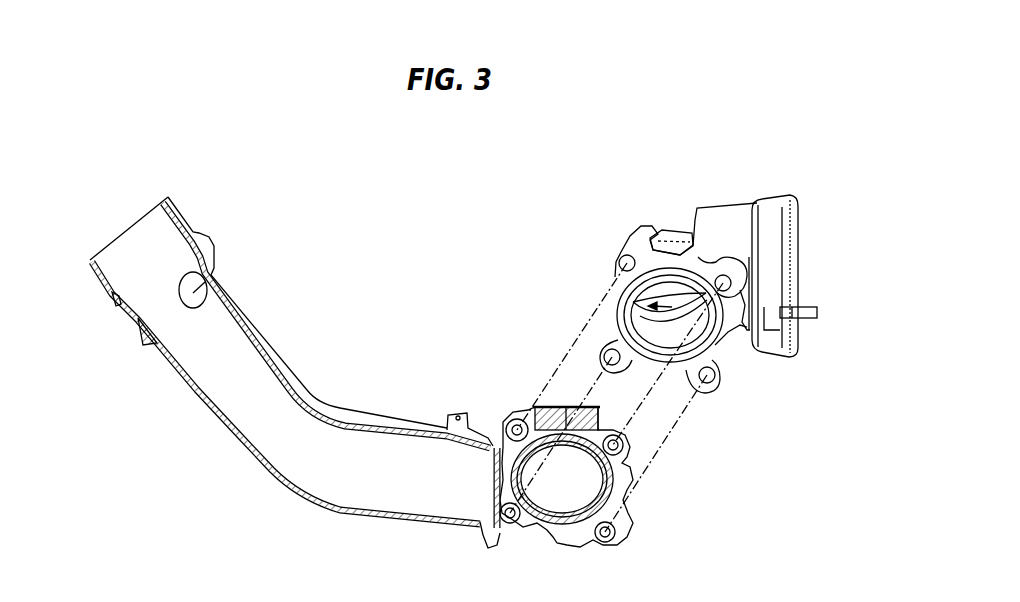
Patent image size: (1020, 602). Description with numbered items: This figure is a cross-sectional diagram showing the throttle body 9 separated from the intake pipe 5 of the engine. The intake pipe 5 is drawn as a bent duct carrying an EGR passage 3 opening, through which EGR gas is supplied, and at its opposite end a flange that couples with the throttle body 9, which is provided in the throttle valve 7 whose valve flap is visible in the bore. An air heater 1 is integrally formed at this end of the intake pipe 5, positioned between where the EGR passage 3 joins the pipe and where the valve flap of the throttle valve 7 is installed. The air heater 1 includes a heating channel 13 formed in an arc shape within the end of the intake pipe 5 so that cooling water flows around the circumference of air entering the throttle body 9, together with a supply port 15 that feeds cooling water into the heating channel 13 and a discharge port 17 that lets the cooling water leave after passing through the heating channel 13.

The air heater 1 is at (528, 309).
The EGR passage 3 is at (208, 280).
The intake pipe 5 is at (197, 374).
The throttle valve 7 is at (622, 280).
The throttle body 9 is at (637, 237).
The heating channel 13 is at (497, 428).
The supply port 15 is at (578, 405).
The discharge port 17 is at (545, 405).